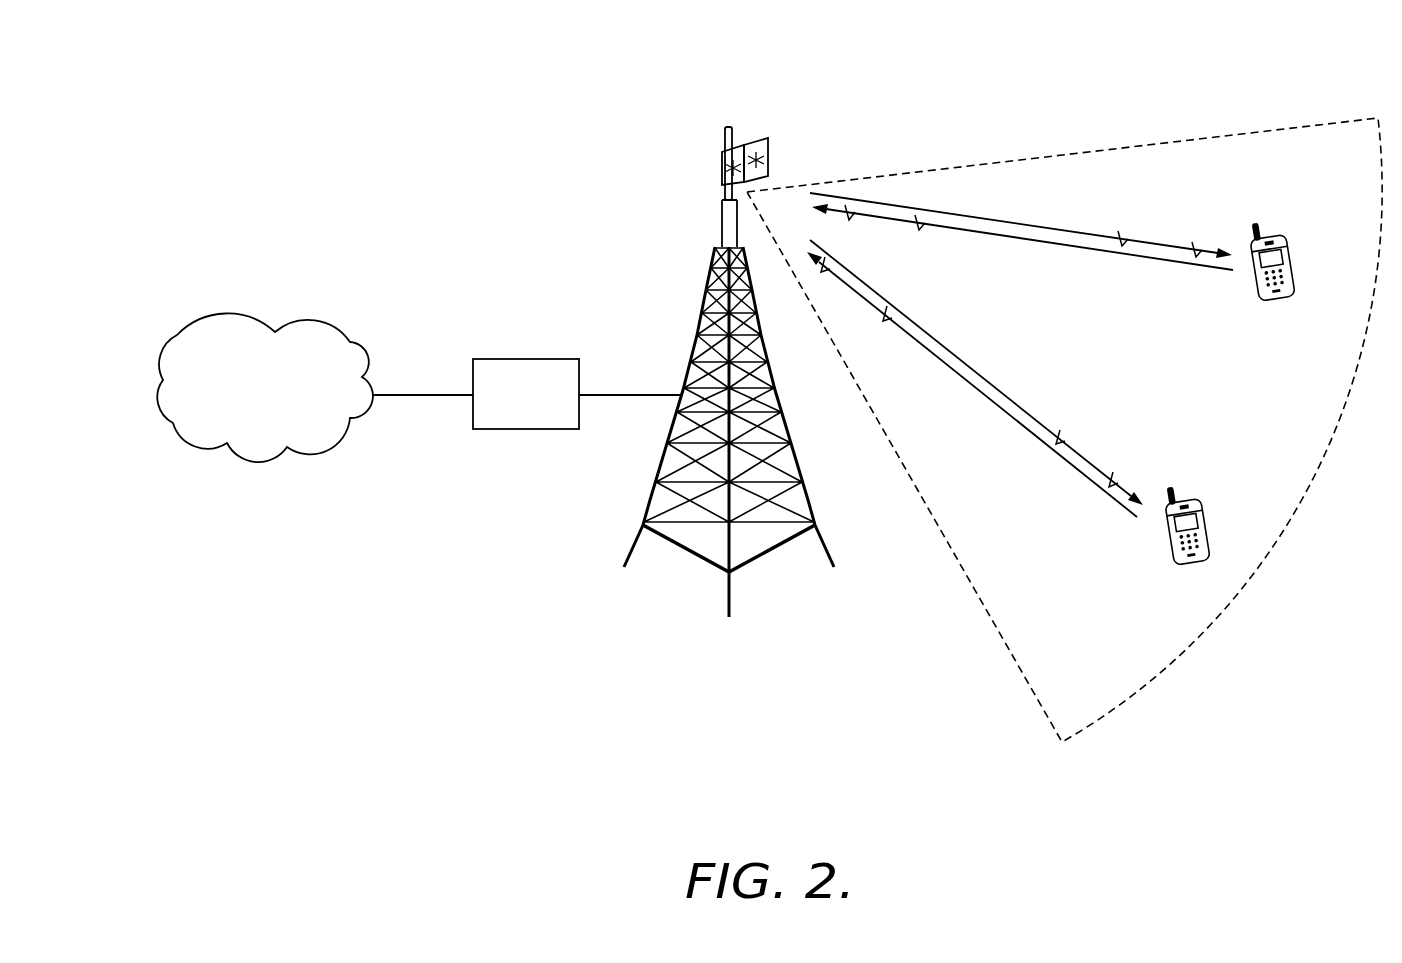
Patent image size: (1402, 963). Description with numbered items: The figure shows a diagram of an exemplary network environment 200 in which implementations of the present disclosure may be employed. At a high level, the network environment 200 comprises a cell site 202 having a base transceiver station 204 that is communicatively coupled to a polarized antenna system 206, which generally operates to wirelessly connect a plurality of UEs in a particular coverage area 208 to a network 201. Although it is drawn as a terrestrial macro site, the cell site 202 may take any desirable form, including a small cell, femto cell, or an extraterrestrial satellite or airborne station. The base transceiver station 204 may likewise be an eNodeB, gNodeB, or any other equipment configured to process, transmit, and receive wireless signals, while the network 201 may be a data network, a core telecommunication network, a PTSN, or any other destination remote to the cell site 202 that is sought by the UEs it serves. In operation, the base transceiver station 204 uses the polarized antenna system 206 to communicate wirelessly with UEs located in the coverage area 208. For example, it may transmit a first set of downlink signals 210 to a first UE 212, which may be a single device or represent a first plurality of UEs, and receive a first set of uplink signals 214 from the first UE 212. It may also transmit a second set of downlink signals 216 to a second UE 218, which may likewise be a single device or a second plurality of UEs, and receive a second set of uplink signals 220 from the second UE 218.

The network environment 200 is at (140, 82).
The network 201 is at (310, 320).
The cell site 202 is at (672, 312).
The base transceiver station 204 is at (537, 359).
The polarized antenna system 206 is at (692, 150).
The coverage area 208 is at (1122, 150).
The first set of downlink signals 210 is at (1000, 390).
The first UE 212 is at (1183, 503).
The first set of uplink signals 214 is at (973, 388).
The second set of downlink signals 216 is at (1053, 228).
The second UE 218 is at (1268, 240).
The second set of uplink signals 220 is at (1013, 240).